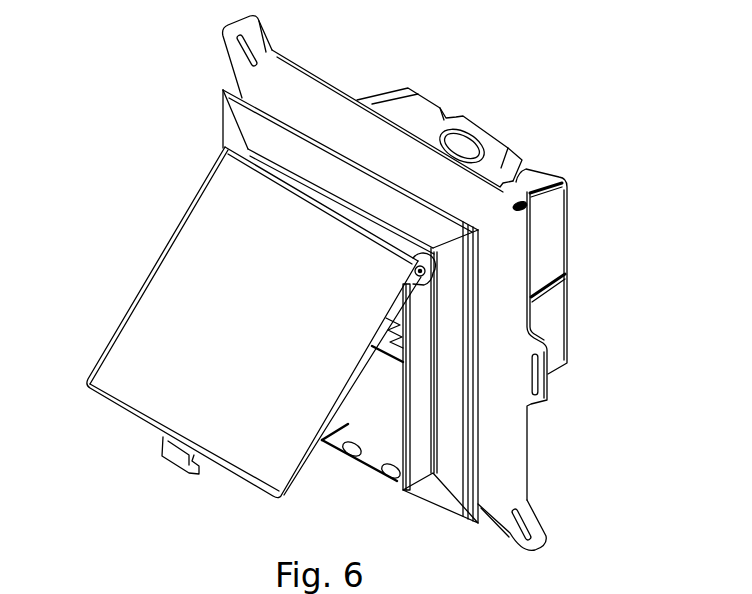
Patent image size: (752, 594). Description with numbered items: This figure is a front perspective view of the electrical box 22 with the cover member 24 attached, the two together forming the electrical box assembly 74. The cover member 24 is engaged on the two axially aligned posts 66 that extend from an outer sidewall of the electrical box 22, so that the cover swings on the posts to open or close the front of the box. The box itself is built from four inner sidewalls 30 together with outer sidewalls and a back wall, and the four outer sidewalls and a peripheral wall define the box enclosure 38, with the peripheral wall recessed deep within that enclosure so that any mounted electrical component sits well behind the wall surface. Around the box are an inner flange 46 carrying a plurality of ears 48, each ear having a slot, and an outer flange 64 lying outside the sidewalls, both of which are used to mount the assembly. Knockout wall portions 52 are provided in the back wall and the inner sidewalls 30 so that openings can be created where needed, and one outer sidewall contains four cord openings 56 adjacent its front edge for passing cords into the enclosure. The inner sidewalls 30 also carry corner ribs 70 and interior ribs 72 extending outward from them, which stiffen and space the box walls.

The electrical box 22 is at (568, 222).
The cover member 24 is at (242, 312).
The inner sidewalls 30 is at (537, 258).
The box enclosure 38 is at (385, 405).
The inner flange 46 is at (487, 354).
The ears 48 is at (142, 593).
The knockout wall portions 52 is at (463, 148).
The cord openings 56 is at (384, 482).
The outer flange 64 is at (450, 427).
The axially aligned posts 66 is at (430, 281).
The corner ribs 70 is at (378, 93).
The interior ribs 72 is at (548, 290).
The electrical box assembly 74 is at (145, 142).